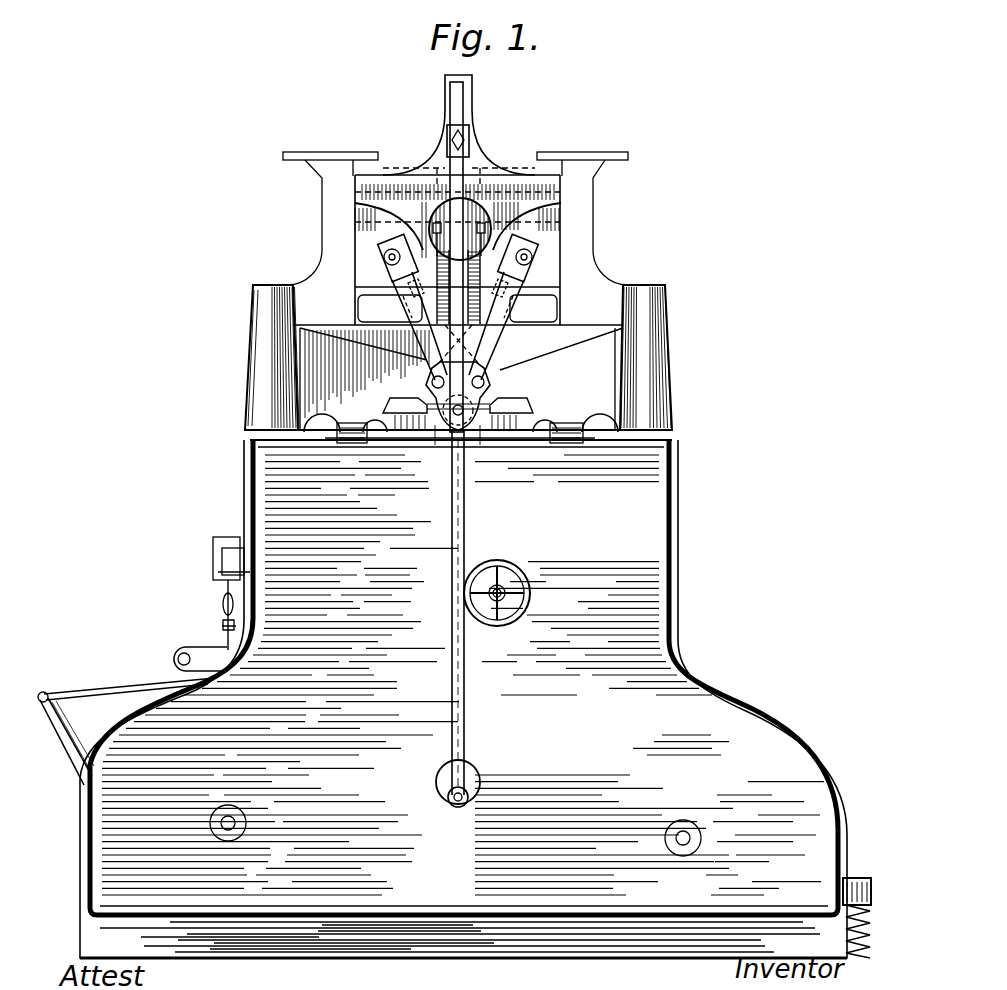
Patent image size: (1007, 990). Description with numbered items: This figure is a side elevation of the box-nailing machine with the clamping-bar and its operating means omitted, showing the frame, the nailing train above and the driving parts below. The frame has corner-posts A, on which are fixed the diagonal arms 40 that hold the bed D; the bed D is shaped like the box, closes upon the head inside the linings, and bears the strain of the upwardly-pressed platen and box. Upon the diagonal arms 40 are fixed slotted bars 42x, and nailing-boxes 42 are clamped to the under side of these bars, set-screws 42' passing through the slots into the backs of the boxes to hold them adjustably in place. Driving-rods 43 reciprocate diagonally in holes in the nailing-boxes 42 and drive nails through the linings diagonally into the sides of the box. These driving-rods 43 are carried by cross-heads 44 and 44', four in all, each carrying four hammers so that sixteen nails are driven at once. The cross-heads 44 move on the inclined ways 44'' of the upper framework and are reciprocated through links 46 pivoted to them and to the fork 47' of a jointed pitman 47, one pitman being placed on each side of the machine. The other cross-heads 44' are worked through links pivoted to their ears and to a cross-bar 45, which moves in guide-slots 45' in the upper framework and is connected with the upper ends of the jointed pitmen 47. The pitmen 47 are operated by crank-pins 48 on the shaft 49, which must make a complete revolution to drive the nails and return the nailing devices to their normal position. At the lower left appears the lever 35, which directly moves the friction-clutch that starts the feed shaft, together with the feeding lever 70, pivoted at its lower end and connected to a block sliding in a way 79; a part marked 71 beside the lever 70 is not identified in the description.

The corner-posts A is at (658, 384).
The guide-slots 45' is at (426, 253).
The cross-bar 45 is at (458, 200).
The jointed pitman 47 is at (496, 459).
The inclined ways 44'' is at (461, 218).
The cross-heads 44' is at (525, 260).
The cross-heads 44 is at (450, 307).
The links 46 is at (412, 310).
The driving-rods 43 is at (464, 347).
The diagonal arms 40 is at (461, 380).
The fork 47' is at (476, 396).
The bars 42x is at (515, 407).
The nailing-boxes 42 is at (460, 454).
The bed D is at (435, 430).
The set-screws 42' is at (494, 464).
The shaft 49 is at (470, 775).
The crank-pins 48 is at (458, 800).
The lever 35 is at (225, 645).
The way 79 is at (178, 656).
The bar 71 is at (103, 688).
The lever 70 is at (80, 750).